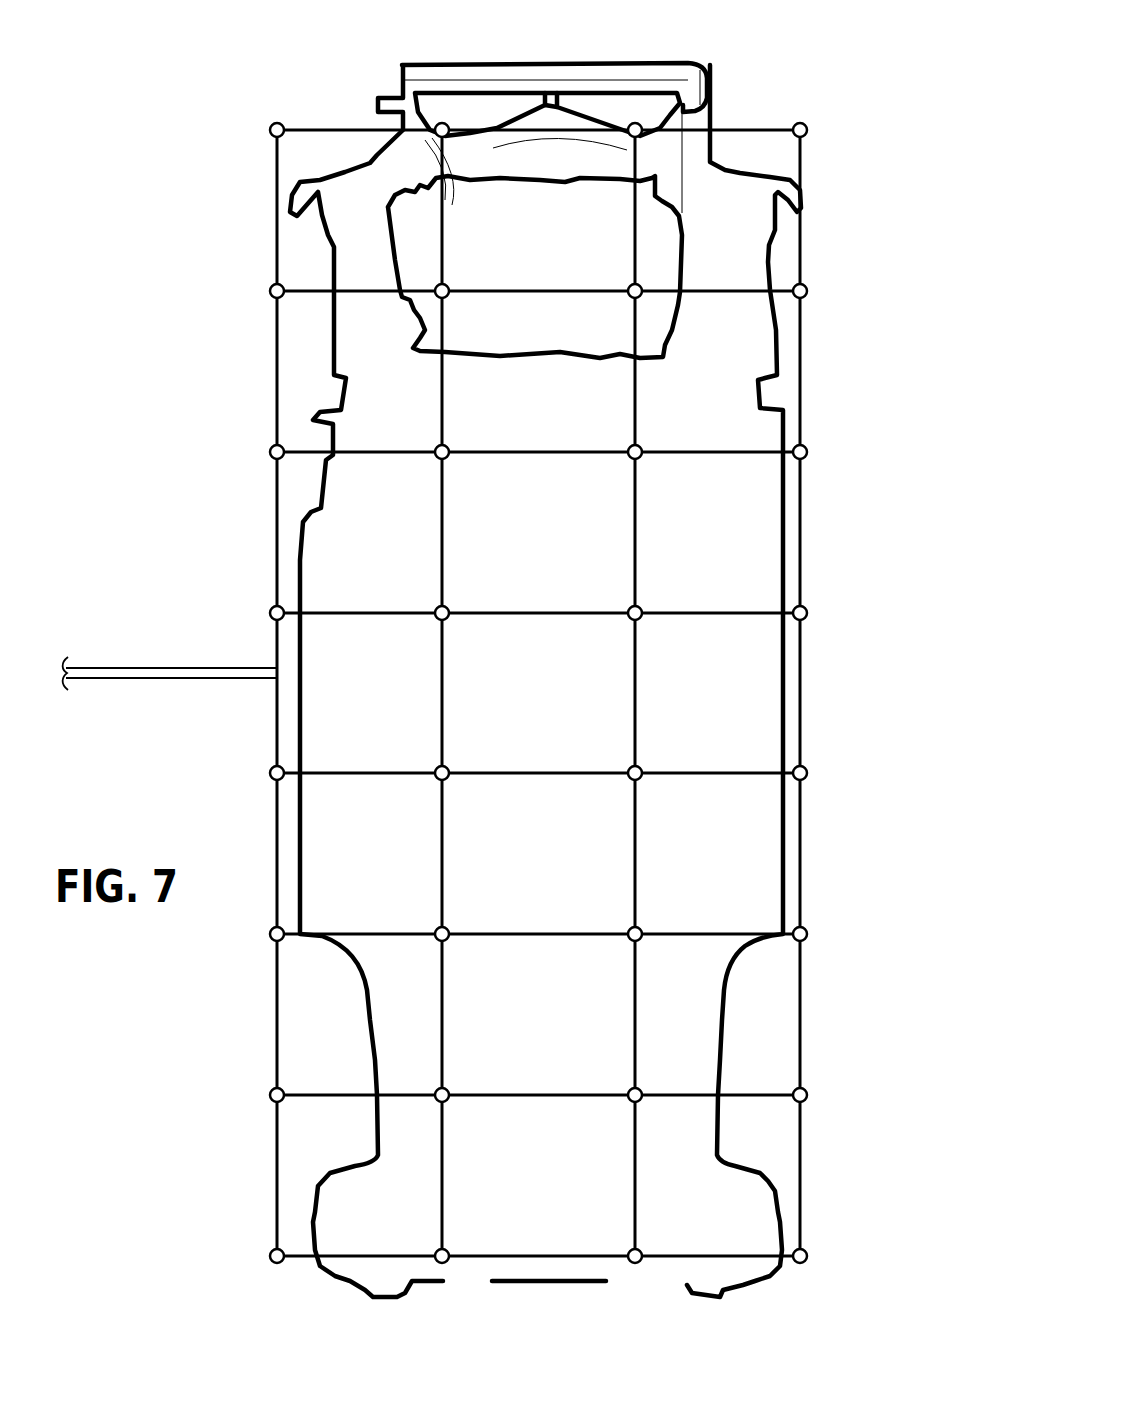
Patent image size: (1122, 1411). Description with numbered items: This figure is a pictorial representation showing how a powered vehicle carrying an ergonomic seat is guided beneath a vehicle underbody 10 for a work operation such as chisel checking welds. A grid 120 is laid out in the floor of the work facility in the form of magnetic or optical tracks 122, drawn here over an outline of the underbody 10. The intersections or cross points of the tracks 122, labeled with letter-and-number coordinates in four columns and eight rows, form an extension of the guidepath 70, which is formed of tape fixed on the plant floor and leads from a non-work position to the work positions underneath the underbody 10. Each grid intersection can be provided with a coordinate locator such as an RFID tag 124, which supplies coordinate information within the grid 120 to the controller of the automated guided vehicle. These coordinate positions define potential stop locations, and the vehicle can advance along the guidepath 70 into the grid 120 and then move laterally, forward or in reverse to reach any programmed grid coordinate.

The vehicle underbody 10 is at (720, 92).
The guidepath 70 is at (168, 667).
The grid 120 is at (248, 227).
The tracks 122 is at (277, 367).
The RFID tag 124 is at (275, 448).